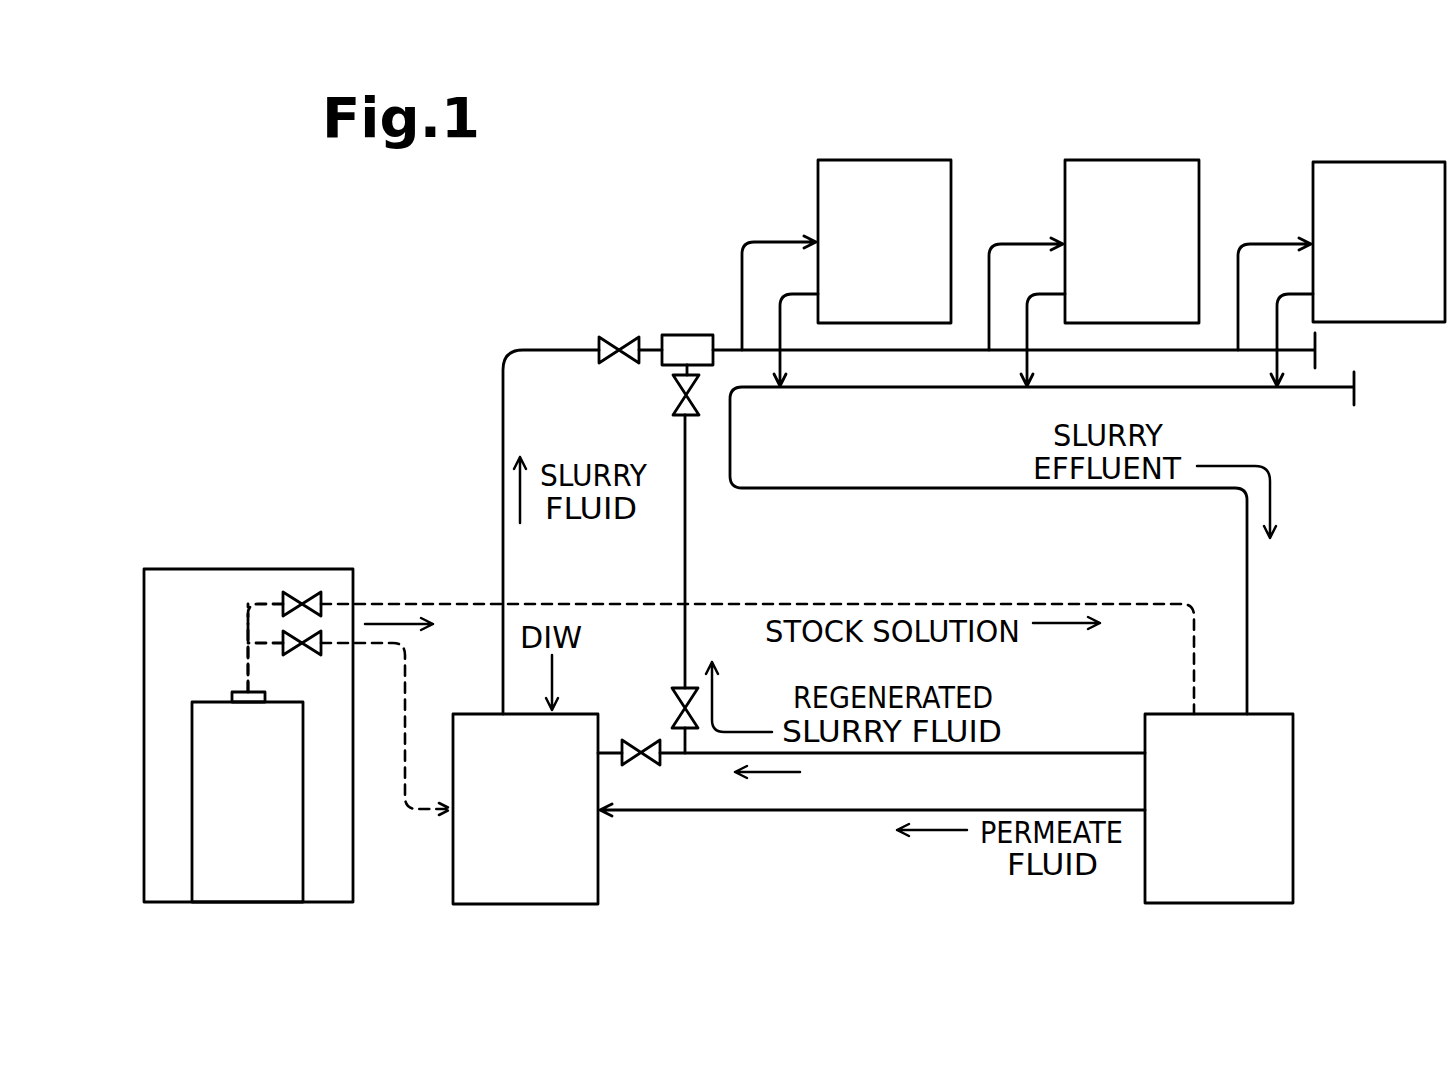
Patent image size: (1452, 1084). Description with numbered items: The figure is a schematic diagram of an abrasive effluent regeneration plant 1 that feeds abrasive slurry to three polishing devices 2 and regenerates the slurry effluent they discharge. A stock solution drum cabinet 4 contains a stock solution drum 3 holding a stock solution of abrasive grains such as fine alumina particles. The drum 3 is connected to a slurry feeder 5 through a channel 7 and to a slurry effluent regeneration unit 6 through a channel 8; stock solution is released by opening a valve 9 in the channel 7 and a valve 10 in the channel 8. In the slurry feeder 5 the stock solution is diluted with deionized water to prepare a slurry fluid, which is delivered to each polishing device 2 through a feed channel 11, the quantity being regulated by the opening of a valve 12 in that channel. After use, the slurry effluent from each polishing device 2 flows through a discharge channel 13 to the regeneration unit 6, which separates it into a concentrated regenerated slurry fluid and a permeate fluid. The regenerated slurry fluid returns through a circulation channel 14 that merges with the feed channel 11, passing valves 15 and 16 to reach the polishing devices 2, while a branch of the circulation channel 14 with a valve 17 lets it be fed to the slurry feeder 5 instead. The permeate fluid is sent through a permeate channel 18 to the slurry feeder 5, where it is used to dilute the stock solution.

The abrasive effluent regeneration plant 1 is at (465, 289).
The polishing devices 2 is at (912, 160).
The stock solution drum 3 is at (257, 778).
The stock solution drum cabinet 4 is at (193, 569).
The slurry feeder 5 is at (540, 800).
The slurry effluent regeneration unit 6 is at (1230, 795).
The channel 7 is at (405, 686).
The channel 8 is at (818, 604).
The valve 9 is at (312, 655).
The valve 10 is at (288, 595).
The feed channel 11 is at (503, 394).
The valve 12 is at (619, 348).
The discharge channel 13 is at (924, 488).
The circulation channel 14 is at (1049, 753).
The valve 15 is at (684, 696).
The valve 16 is at (684, 404).
The valve 17 is at (638, 747).
The permeate channel 18 is at (820, 813).